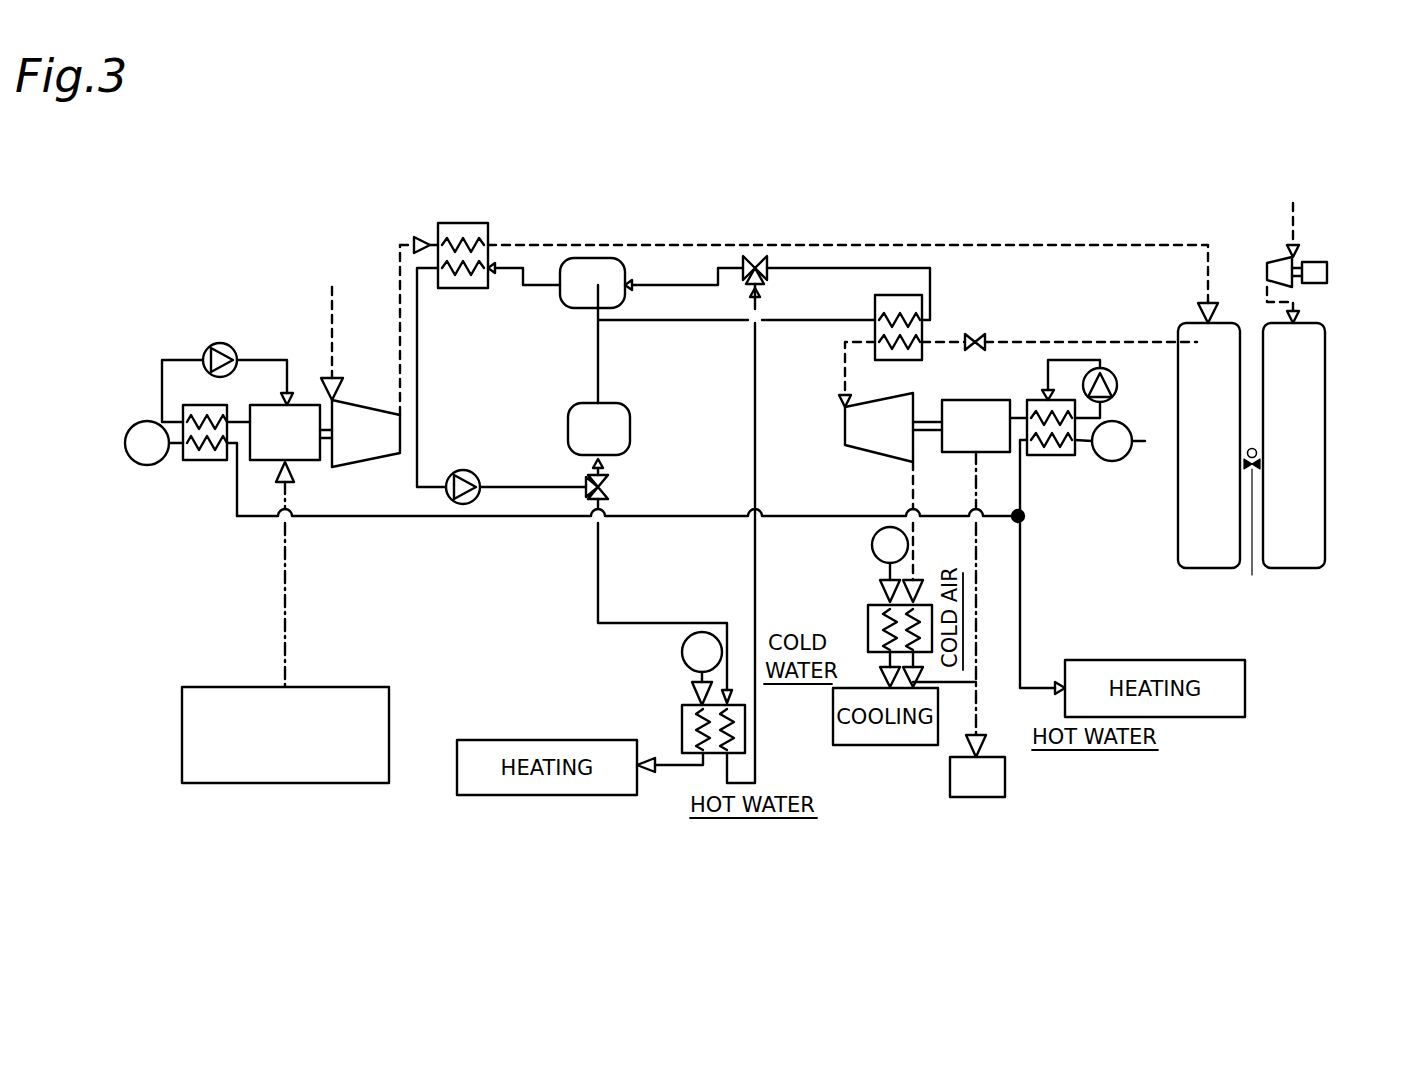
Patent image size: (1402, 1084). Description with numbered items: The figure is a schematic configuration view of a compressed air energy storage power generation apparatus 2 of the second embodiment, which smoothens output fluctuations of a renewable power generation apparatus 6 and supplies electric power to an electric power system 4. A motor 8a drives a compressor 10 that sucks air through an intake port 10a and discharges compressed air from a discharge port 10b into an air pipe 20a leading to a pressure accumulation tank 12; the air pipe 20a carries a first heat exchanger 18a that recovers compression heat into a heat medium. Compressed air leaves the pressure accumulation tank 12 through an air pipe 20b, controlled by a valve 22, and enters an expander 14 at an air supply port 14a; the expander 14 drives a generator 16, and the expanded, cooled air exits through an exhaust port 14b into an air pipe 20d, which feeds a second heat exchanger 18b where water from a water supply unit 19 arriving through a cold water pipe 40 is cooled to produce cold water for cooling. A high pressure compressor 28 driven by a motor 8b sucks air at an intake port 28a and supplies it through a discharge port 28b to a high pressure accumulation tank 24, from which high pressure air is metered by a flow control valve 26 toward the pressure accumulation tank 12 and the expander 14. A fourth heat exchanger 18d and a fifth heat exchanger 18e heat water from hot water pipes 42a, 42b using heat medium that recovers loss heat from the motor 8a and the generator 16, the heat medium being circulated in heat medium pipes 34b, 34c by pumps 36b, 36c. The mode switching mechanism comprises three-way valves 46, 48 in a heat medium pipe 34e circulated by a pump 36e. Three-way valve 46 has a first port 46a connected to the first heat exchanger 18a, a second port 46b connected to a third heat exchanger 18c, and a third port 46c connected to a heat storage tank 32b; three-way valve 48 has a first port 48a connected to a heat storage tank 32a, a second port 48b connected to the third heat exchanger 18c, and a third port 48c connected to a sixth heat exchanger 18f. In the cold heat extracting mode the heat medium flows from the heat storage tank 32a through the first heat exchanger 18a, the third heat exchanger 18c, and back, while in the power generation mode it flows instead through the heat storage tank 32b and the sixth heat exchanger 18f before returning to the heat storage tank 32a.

The compressed air energy storage power generation apparatus 2 is at (278, 238).
The electric power system 4 is at (1005, 775).
The power generation apparatus 6 is at (390, 688).
The motor 8a is at (305, 461).
The motor 8b is at (1328, 274).
The compressor 10 is at (372, 462).
The intake port 10a is at (330, 398).
The discharge port 10b is at (396, 412).
The pressure accumulation tank 12 is at (1208, 570).
The expander 14 is at (852, 447).
The air supply port 14a is at (842, 406).
The exhaust port 14b is at (910, 463).
The generator 16 is at (975, 400).
The first heat exchanger 18a is at (470, 290).
The second heat exchanger 18b is at (868, 632).
The third heat exchanger 18c is at (680, 717).
The fourth heat exchanger 18d is at (190, 462).
The fifth heat exchanger 18e is at (1060, 456).
The sixth heat exchanger 18f is at (922, 320).
The water supply unit 19 is at (145, 421).
The air pipe 20a is at (1058, 250).
The air pipe 20b is at (1155, 342).
The air pipe 20d is at (915, 572).
The valve 22 is at (980, 340).
The high pressure accumulation tank 24 is at (1300, 570).
The flow control valve 26 is at (1252, 576).
The high pressure compressor 28 is at (1267, 270).
The intake port 28a is at (1296, 255).
The discharge port 28b is at (1266, 284).
The heat storage tank 32a is at (590, 308).
The heat storage tank 32b is at (620, 404).
The heat medium pipe 34b is at (183, 362).
The heat medium pipe 34c is at (1102, 416).
The heat medium pipe 34e is at (420, 416).
The pump 36b is at (220, 343).
The pump 36c is at (1116, 380).
The pump 36e is at (462, 470).
The cold water pipe 40 is at (880, 582).
The hot water pipe 42a is at (537, 518).
The hot water pipe 42b is at (1022, 520).
The three-way valve 46 is at (612, 487).
The first port 46a is at (584, 487).
The second port 46b is at (610, 497).
The third port 46c is at (605, 478).
The three-way valve 48 is at (755, 266).
The first port 48a is at (745, 275).
The second port 48b is at (762, 278).
The third port 48c is at (758, 266).